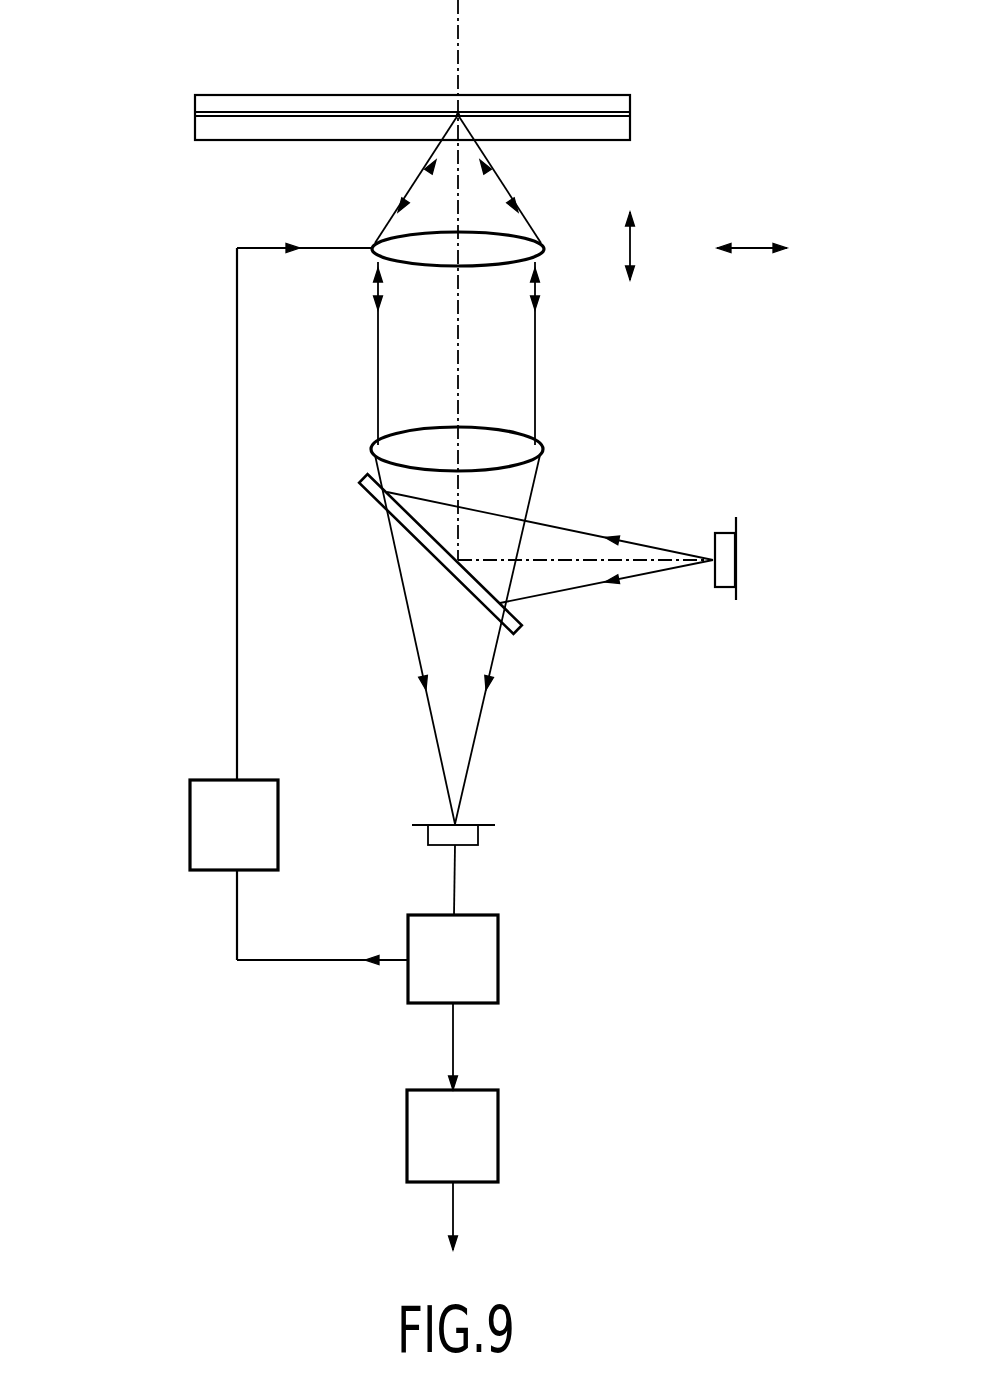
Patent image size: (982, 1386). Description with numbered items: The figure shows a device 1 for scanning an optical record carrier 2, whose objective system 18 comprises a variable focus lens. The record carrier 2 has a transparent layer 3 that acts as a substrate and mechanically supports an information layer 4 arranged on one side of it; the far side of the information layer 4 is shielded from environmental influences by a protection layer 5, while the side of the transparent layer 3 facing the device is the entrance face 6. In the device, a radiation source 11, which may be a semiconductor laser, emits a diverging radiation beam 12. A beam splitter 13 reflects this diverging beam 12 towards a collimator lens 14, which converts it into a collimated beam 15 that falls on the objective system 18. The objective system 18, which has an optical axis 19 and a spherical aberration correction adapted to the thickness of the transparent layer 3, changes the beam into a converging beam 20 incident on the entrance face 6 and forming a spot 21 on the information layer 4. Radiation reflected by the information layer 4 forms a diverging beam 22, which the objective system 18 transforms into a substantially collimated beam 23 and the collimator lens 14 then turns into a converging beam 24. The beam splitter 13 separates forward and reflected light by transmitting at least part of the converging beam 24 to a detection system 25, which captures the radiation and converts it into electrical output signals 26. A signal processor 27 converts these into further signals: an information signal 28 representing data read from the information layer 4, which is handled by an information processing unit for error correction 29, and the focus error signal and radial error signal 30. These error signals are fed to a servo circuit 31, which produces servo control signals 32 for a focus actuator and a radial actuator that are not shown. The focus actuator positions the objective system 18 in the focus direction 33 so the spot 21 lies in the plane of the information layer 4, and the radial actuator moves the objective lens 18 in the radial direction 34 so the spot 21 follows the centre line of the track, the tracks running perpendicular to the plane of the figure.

The device for scanning an optical record carrier 1 is at (102, 508).
The optical record carrier 2 is at (148, 24).
The transparent layer 3 is at (218, 128).
The information layer 4 is at (243, 112).
The protection layer 5 is at (218, 103).
The entrance face 6 is at (237, 140).
The radiation source 11 is at (736, 570).
The radiation beam 12 is at (633, 540).
The beam splitter 13 is at (375, 490).
The collimator lens 14 is at (392, 447).
The collimated beam 15 is at (378, 383).
The objective system 18 is at (375, 246).
The optical axis 19 is at (460, 30).
The converging beam 20 is at (432, 165).
The spot 21 is at (458, 113).
The diverging beam 22 is at (512, 211).
The substantially collimated beam 23 is at (538, 303).
The converging beam 24 is at (530, 484).
The detection system 25 is at (480, 835).
The electrical output signals 26 is at (456, 885).
The signal processor 27 is at (500, 960).
The information signal 28 is at (455, 1038).
The information processing unit for error correction 29 is at (498, 1133).
The focus error signal and radial error signal 30 is at (290, 962).
The servo circuit 31 is at (190, 826).
The servo control signals 32 is at (237, 565).
The focus direction 33 is at (630, 250).
The radial direction 34 is at (750, 248).